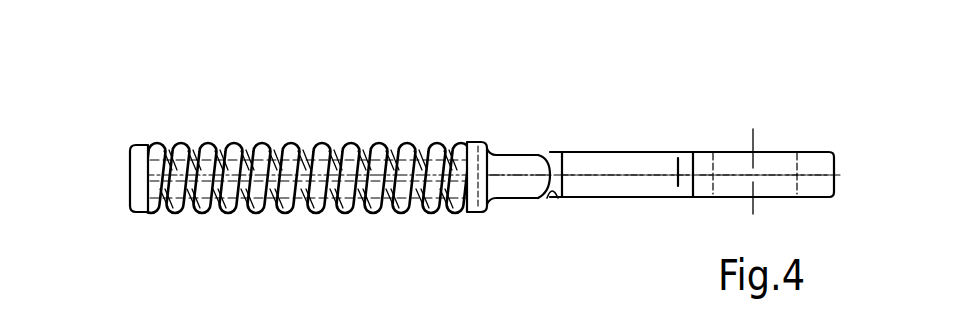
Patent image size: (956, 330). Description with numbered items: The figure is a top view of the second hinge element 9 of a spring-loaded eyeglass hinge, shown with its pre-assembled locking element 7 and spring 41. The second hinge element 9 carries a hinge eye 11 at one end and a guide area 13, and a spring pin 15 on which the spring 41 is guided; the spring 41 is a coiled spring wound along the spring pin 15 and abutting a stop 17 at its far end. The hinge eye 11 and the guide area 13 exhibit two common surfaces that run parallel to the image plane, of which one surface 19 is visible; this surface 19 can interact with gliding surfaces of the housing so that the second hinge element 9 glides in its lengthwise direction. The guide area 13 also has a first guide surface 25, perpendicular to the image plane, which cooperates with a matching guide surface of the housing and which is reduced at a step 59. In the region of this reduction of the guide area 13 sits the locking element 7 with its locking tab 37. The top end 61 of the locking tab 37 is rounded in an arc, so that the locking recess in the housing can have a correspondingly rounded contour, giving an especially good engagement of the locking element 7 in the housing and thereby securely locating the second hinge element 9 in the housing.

The locking element 7 is at (517, 169).
The second hinge element 9 is at (835, 173).
The hinge eye 11 is at (810, 170).
The guide area 13 is at (643, 181).
The spring pin 15 is at (297, 152).
The stop 17 is at (143, 168).
The surface 19 is at (672, 145).
The first guide surface 25 is at (621, 168).
The locking tab 37 is at (523, 181).
The spring 41 is at (490, 113).
The step 59 is at (563, 158).
The top end 61 is at (550, 187).